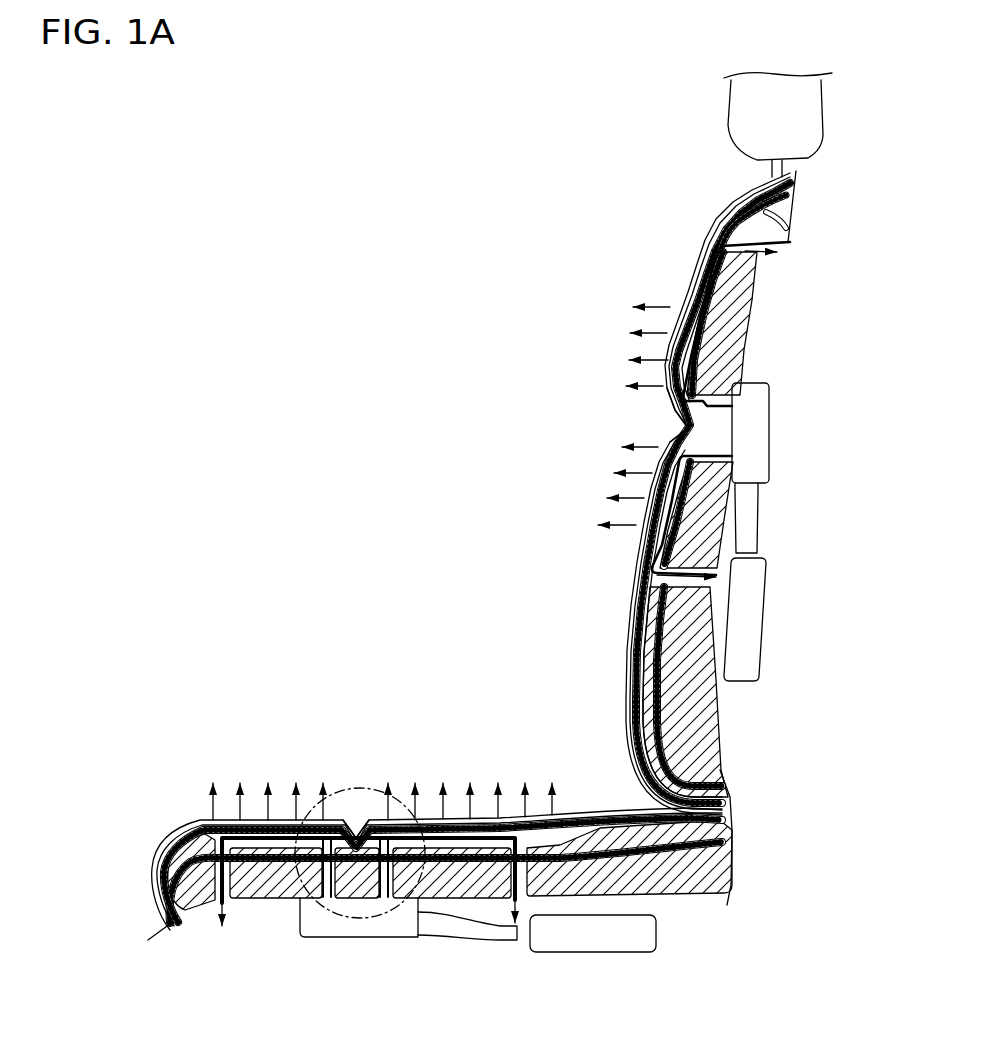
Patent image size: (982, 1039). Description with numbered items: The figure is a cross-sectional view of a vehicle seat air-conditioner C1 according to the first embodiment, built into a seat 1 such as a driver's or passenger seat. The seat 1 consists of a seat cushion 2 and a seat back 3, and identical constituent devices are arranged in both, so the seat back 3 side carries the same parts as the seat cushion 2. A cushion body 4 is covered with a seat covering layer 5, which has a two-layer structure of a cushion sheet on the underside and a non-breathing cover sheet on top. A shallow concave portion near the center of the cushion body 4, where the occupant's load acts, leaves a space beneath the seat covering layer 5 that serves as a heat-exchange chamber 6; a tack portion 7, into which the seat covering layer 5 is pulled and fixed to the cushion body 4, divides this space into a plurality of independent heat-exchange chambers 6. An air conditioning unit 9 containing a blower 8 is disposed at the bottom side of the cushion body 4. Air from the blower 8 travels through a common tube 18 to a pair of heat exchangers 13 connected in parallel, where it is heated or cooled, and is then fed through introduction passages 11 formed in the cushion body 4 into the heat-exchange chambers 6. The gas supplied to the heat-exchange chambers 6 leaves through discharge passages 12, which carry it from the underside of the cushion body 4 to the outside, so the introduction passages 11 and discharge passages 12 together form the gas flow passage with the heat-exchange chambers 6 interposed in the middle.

The seat 1 is at (824, 182).
The seat cushion 2 is at (156, 852).
The seat back 3 is at (706, 228).
The cushion body 4 is at (738, 317).
The seat covering layer 5 is at (697, 258).
The heat-exchange chamber 6 is at (670, 330).
The tack portion 7 is at (673, 428).
The blower 8 is at (752, 642).
The air conditioning unit 9 is at (568, 702).
The introduction passage 11 is at (720, 405).
The discharge passage 12 is at (792, 248).
The heat exchanger 13 is at (760, 431).
The common tube 18 is at (747, 523).
The vehicle seat air-conditioner C1 is at (495, 622).